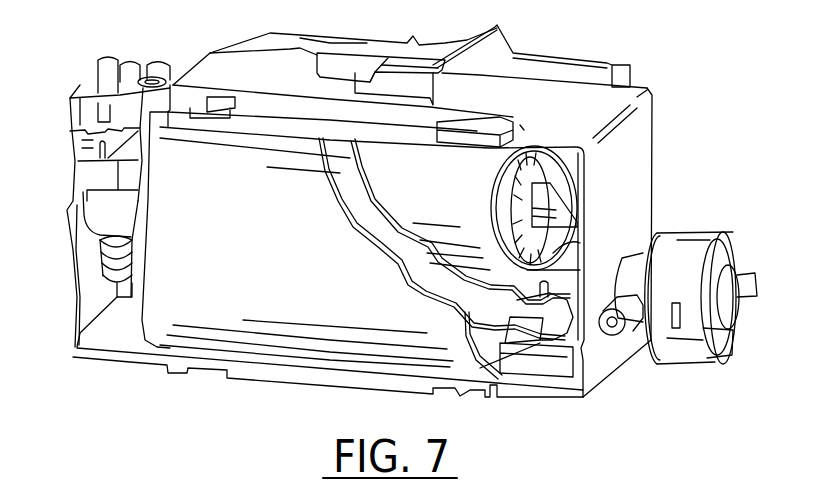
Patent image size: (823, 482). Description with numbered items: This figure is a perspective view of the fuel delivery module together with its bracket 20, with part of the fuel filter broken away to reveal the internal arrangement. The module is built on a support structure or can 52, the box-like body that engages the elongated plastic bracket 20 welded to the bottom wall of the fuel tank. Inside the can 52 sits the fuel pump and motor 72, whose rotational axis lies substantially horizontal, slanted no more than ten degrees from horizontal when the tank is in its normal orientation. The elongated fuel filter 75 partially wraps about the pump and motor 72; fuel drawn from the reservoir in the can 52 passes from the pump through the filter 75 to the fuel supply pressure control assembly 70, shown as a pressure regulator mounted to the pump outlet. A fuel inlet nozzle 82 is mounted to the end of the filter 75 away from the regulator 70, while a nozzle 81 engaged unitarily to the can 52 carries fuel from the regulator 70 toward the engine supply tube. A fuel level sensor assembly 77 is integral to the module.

The bracket 20 is at (543, 68).
The can 52 is at (642, 146).
The fuel supply pressure control assembly 70 is at (687, 230).
The fuel pump and motor 72 is at (460, 200).
The fuel filter 75 is at (267, 255).
The fuel level sensor assembly 77 is at (133, 57).
The nozzle 81 is at (605, 335).
The fuel inlet nozzle 82 is at (90, 224).